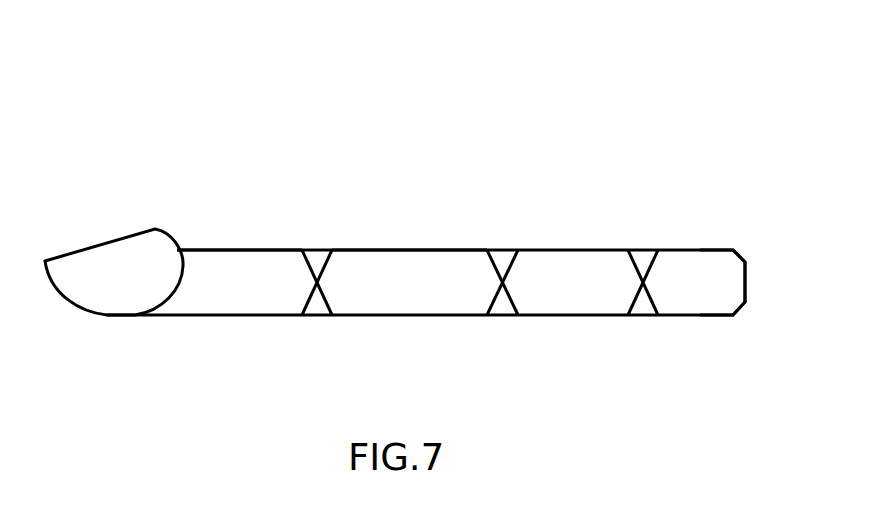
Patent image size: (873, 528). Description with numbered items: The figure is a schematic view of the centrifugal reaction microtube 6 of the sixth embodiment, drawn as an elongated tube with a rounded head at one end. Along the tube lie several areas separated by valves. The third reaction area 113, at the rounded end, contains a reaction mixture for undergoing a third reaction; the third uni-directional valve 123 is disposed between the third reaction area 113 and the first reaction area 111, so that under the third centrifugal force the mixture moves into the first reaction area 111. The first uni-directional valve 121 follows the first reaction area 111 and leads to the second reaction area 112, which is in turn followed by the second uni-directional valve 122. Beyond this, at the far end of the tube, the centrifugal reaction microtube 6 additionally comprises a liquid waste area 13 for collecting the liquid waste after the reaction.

The centrifugal reaction microtube 6 is at (94, 101).
The liquid waste area 13 is at (718, 277).
The first reaction area 111 is at (358, 290).
The second reaction area 112 is at (563, 290).
The third reaction area 113 is at (193, 290).
The first uni-directional valve 121 is at (462, 255).
The second uni-directional valve 122 is at (645, 250).
The third uni-directional valve 123 is at (278, 252).